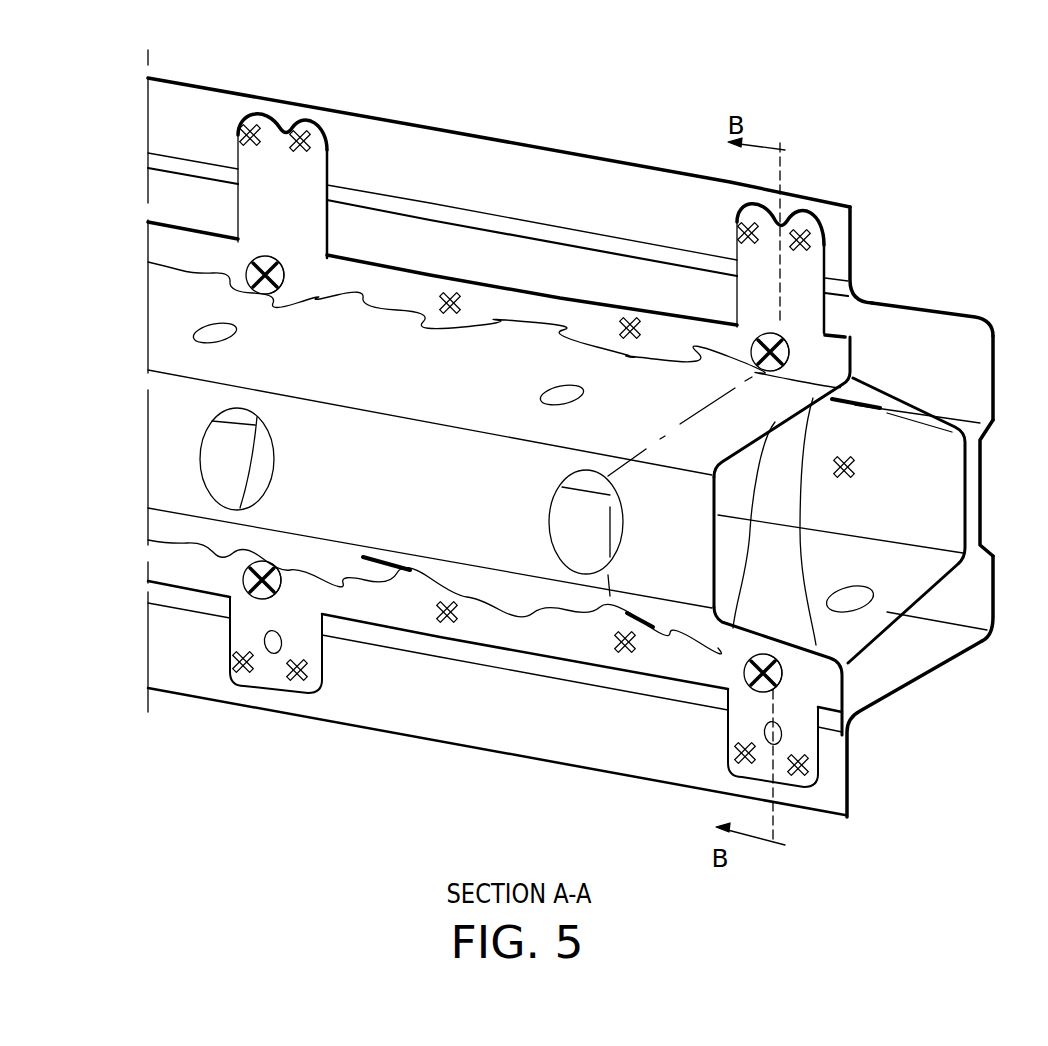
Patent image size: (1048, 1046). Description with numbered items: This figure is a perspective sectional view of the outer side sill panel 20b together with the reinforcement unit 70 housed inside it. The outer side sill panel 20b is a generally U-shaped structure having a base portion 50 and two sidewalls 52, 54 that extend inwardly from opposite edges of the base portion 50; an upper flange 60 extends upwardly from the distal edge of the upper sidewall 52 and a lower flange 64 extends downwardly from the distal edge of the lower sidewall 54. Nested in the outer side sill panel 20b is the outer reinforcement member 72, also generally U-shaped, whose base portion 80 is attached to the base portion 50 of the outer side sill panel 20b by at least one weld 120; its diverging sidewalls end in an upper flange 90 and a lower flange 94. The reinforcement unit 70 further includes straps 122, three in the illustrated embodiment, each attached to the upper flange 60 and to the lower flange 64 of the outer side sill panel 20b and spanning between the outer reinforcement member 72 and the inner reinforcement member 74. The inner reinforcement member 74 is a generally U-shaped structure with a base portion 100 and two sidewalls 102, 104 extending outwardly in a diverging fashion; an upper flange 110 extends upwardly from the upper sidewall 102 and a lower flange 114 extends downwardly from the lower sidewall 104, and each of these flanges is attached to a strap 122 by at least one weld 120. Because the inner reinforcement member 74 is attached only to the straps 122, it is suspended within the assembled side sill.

The outer side sill panel 20b is at (975, 332).
The base portion 50 is at (990, 458).
The upper sidewall 52 is at (917, 300).
The lower sidewall 54 is at (930, 672).
The upper flange 60 is at (490, 167).
The lower flange 64 is at (613, 737).
The reinforcement unit 70 is at (526, 602).
The outer reinforcement member 72 is at (876, 505).
The inner reinforcement member 74 is at (471, 510).
The base portion 80 is at (927, 493).
The upper flange 90 is at (852, 357).
The lower flange 94 is at (852, 685).
The base portion 100 is at (170, 422).
The upper sidewall 102 is at (170, 300).
The lower sidewall 104 is at (218, 542).
The upper flange 110 is at (170, 250).
The lower flange 114 is at (215, 578).
The weld 120 is at (302, 122).
The strap 122 is at (240, 212).